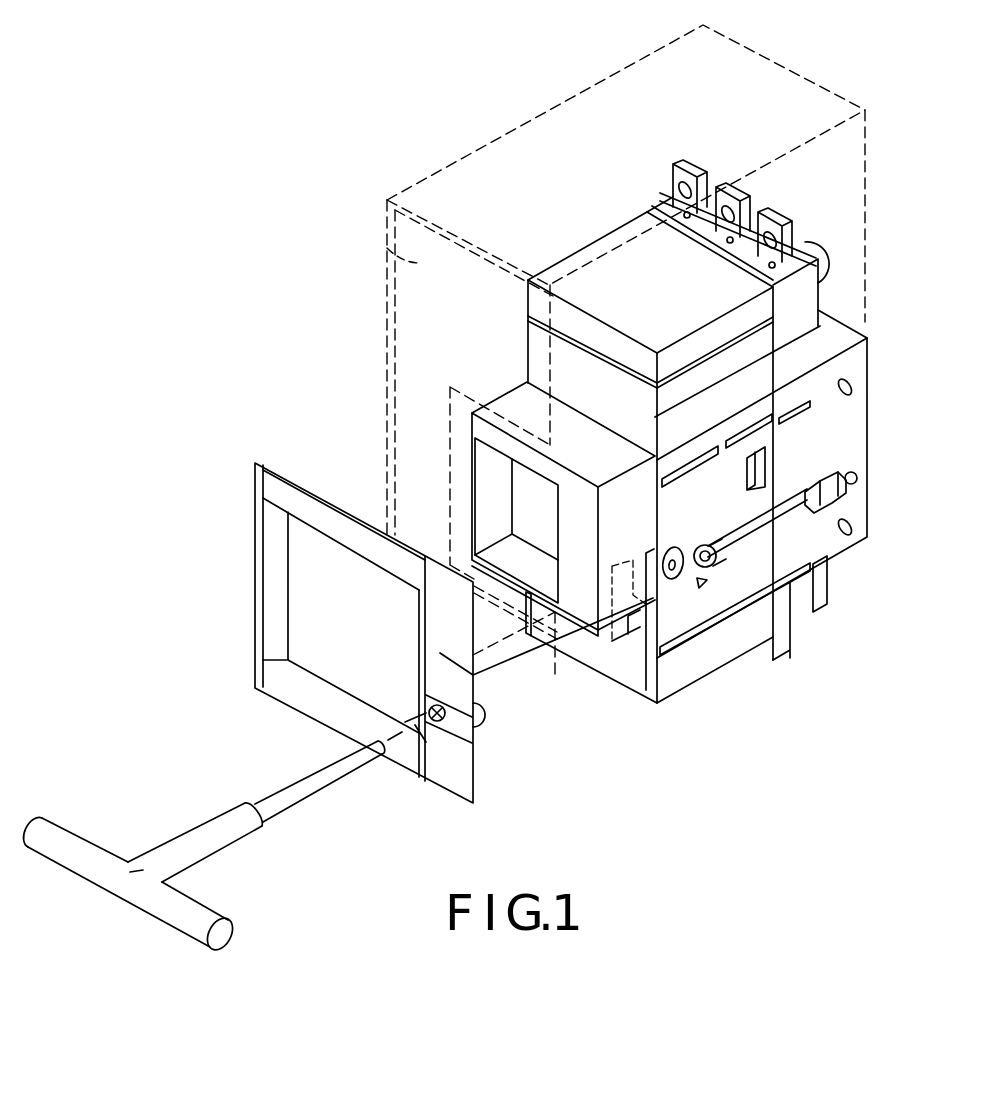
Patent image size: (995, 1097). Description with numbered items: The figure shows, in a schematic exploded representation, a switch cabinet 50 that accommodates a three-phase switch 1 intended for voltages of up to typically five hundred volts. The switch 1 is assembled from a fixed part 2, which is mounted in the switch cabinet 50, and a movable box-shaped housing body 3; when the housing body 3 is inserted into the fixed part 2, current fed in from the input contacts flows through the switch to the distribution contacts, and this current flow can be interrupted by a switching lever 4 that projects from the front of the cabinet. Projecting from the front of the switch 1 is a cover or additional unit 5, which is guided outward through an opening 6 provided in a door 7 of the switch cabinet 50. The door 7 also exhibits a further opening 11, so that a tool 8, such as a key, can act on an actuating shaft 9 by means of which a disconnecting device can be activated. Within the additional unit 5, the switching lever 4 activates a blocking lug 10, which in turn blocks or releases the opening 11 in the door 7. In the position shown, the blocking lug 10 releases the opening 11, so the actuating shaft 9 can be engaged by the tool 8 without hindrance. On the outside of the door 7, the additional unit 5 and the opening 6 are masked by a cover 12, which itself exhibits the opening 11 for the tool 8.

The switch 1 is at (722, 150).
The fixed part 2 is at (834, 340).
The housing body 3 is at (622, 253).
The switching lever 4 is at (545, 540).
The additional unit 5 is at (510, 430).
The opening 6 is at (555, 408).
The door 7 is at (387, 248).
The tool 8 is at (225, 835).
The actuating shaft 9 is at (717, 560).
The blocking lug 10 is at (652, 572).
The further opening 11 is at (667, 577).
The cover 12 is at (457, 757).
The switch cabinet 50 is at (530, 150).